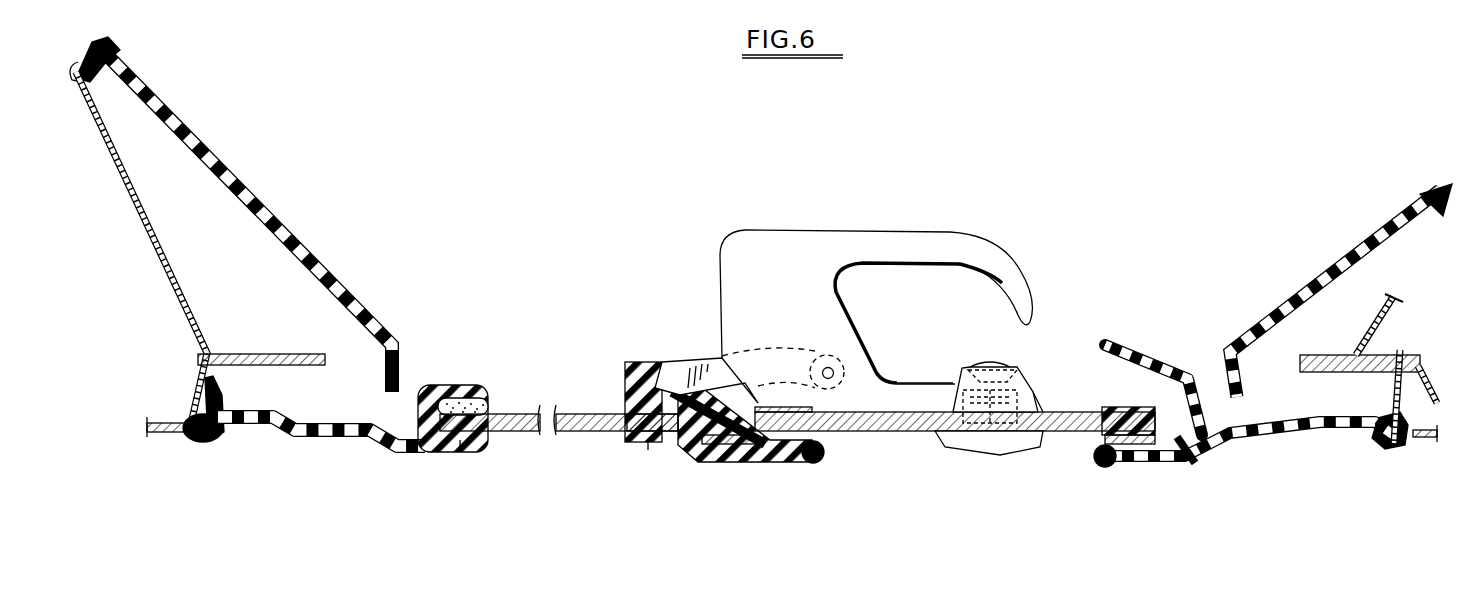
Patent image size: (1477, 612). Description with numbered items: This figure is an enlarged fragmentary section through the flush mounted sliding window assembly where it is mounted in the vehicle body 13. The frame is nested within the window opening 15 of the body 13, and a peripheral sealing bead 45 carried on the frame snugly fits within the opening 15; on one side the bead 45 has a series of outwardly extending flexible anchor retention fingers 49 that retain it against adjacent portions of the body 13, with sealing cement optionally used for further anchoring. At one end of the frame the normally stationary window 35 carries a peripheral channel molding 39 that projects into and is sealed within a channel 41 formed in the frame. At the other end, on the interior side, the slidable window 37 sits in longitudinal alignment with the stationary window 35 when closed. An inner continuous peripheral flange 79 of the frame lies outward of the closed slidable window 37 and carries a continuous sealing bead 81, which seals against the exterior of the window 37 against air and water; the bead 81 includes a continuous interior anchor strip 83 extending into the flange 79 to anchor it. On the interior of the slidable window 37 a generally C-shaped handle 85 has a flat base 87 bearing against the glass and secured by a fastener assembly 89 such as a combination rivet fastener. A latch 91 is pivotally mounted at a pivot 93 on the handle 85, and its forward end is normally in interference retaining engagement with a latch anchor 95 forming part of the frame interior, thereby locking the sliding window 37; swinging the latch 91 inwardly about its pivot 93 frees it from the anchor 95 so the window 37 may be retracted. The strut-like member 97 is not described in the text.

The vehicle body 13 is at (195, 416).
The window opening 15 is at (278, 374).
The stationary window 35 is at (586, 433).
The slidable window 37 is at (900, 433).
The peripheral channel molding 39 is at (461, 441).
The channel 41 is at (456, 386).
The peripheral sealing bead 45 is at (212, 440).
The anchor retention fingers 49 is at (211, 387).
The inner peripheral flange 79 is at (750, 457).
The sealing bead 81 is at (825, 457).
The interior anchor strip 83 is at (733, 440).
The handle 85 is at (980, 255).
The flat base 87 is at (925, 383).
The fastener assembly 89 is at (992, 366).
The latch 91 is at (681, 376).
The pivot 93 is at (833, 370).
The latch anchor 95 is at (648, 362).
The strut 97 is at (266, 218).